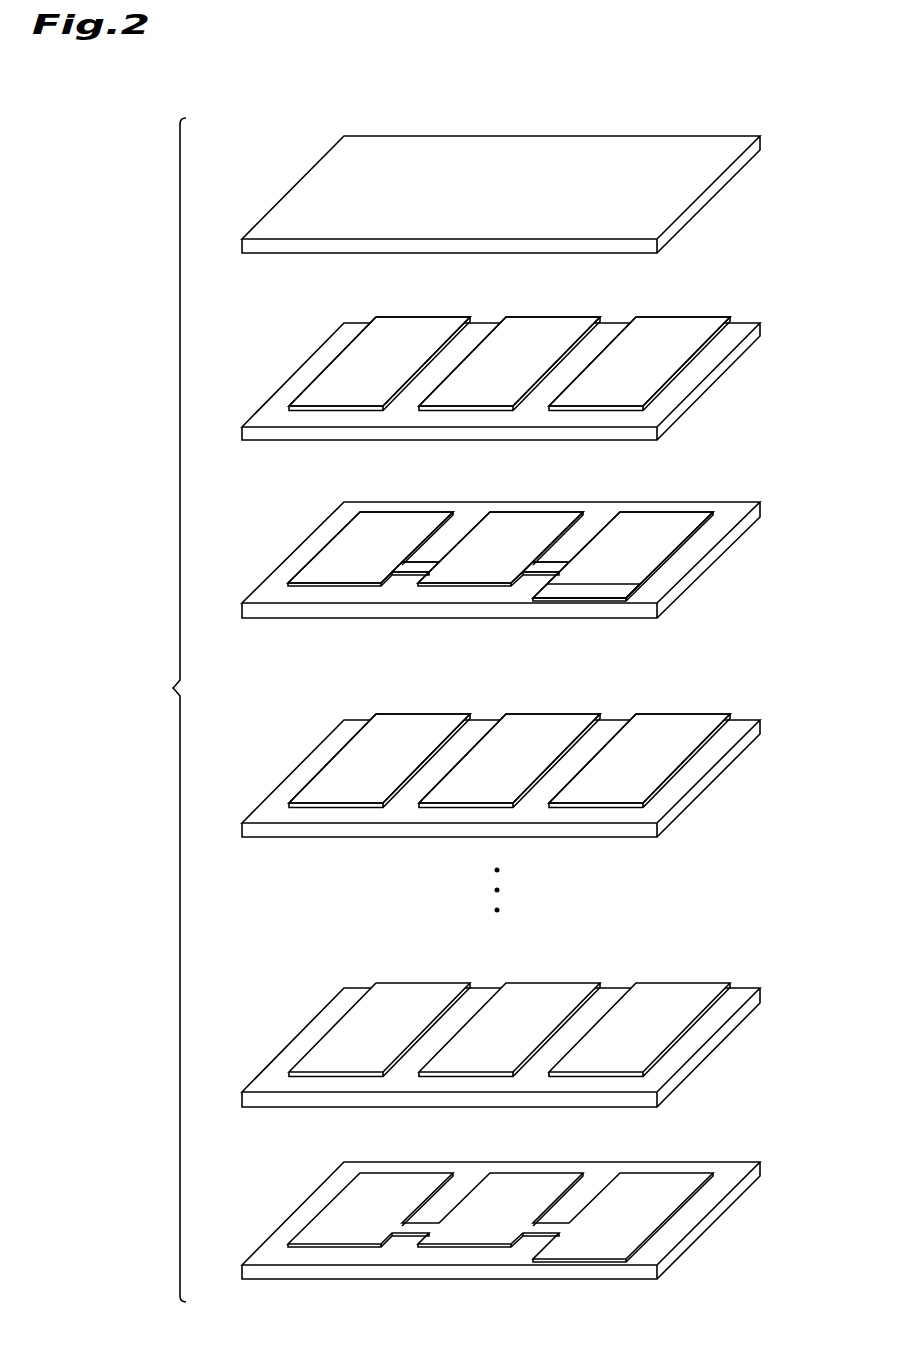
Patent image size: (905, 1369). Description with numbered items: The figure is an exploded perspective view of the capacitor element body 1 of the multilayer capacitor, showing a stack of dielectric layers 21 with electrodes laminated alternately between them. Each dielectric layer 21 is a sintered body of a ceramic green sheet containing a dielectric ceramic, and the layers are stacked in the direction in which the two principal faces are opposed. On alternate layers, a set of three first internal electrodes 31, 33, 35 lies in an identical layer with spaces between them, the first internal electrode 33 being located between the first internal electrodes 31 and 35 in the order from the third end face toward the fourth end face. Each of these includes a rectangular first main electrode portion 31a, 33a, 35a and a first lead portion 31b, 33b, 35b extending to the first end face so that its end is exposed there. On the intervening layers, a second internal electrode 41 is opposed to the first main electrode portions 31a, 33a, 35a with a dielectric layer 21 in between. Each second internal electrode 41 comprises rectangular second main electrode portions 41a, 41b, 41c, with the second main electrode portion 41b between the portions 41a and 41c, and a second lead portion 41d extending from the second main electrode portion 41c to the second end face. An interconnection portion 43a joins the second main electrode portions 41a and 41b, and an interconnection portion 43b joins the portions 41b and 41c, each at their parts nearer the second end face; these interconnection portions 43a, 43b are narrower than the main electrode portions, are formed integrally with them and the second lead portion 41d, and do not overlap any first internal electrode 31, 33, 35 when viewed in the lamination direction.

The capacitor element body 1 is at (171, 710).
The dielectric layer 21 is at (292, 188).
The first internal electrode 31 is at (331, 363).
The first main electrode portion 31a is at (340, 378).
The first lead portion 31b is at (413, 327).
The first internal electrode 33 is at (478, 335).
The first main electrode portion 33a is at (470, 387).
The first lead portion 33b is at (535, 327).
The first internal electrode 35 is at (690, 367).
The first main electrode portion 35a is at (627, 378).
The first lead portion 35b is at (657, 327).
The second internal electrode 41 is at (687, 540).
The second main electrode portion 41a is at (327, 542).
The second main electrode portion 41b is at (507, 532).
The second main electrode portion 41c is at (640, 532).
The second lead portion 41d is at (590, 588).
The interconnection portion 43a is at (413, 567).
The interconnection portion 43b is at (540, 567).